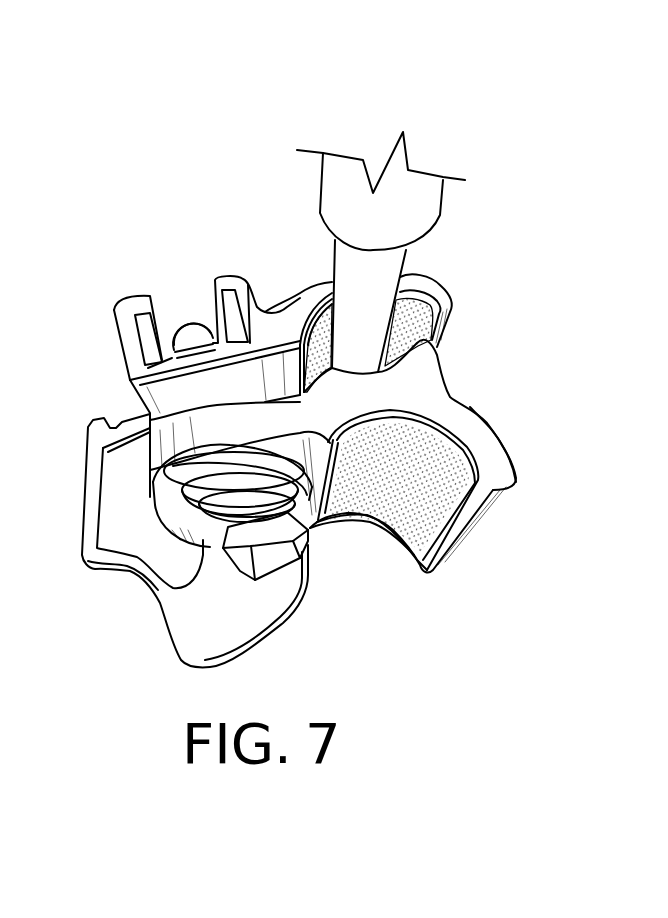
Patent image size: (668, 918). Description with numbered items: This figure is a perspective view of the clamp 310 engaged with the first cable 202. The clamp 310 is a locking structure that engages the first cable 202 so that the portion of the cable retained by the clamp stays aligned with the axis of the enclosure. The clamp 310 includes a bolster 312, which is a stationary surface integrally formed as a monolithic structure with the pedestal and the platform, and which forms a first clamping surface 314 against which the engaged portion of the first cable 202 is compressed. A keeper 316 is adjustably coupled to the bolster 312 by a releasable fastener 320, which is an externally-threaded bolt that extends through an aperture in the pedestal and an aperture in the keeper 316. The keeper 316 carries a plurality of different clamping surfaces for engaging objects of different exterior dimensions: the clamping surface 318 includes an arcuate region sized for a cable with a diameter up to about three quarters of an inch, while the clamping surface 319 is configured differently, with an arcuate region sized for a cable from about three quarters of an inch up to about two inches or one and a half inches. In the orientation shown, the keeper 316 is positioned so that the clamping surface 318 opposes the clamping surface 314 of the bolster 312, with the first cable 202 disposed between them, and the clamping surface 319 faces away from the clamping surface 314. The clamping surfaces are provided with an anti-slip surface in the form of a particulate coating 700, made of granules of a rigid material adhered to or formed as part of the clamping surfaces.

The first cable 202 is at (333, 268).
The clamp 310 is at (522, 413).
The bolster 312 is at (432, 293).
The first clamping surface 314 is at (413, 318).
The keeper 316 is at (505, 460).
The clamping surface 318 is at (372, 370).
The clamping surface 319 is at (440, 510).
The fastener 320 is at (245, 570).
The particulate coating 700 is at (385, 497).